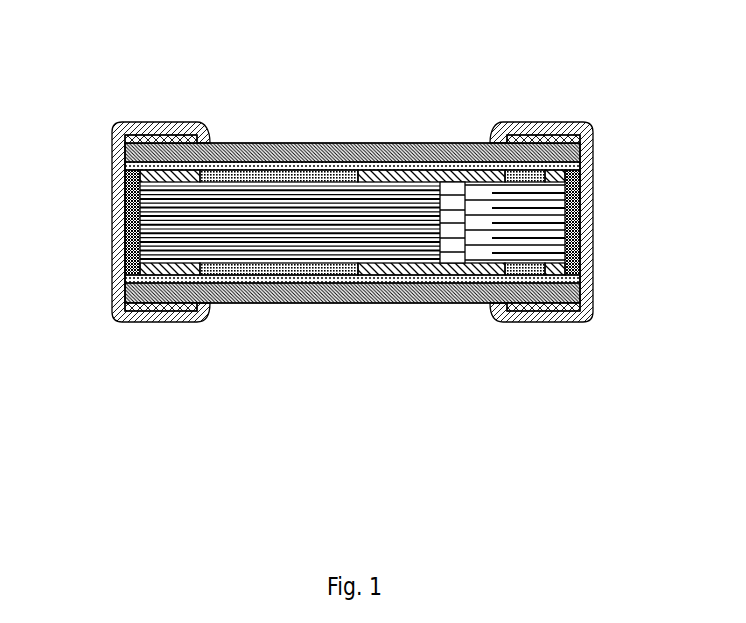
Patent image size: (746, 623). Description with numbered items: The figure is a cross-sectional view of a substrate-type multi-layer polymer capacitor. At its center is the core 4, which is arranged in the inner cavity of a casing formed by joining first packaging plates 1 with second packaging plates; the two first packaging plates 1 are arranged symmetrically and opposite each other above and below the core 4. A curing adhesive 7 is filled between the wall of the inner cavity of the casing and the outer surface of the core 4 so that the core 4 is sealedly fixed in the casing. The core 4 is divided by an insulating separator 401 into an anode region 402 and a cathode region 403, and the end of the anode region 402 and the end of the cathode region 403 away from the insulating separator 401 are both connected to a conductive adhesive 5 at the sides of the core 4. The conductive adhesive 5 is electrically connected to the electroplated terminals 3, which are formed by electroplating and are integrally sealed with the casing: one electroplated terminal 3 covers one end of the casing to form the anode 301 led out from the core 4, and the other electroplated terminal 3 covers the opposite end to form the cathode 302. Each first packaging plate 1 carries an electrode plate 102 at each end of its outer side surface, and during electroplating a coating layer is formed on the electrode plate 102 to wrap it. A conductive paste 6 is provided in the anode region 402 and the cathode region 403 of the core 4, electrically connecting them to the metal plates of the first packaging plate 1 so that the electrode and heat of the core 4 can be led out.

The first packaging plate 1 is at (371, 141).
The electrode plate 102 is at (158, 137).
The conductive paste 6 is at (255, 140).
The insulating separator 401 is at (453, 210).
The core 4 is at (323, 228).
The curing adhesive 7 is at (452, 265).
The cathode region 403 is at (124, 197).
The anode region 402 is at (593, 182).
The electroplated terminal 3 is at (593, 220).
The conductive adhesive 5 is at (124, 265).
The cathode 302 is at (353, 240).
The anode 301 is at (587, 292).